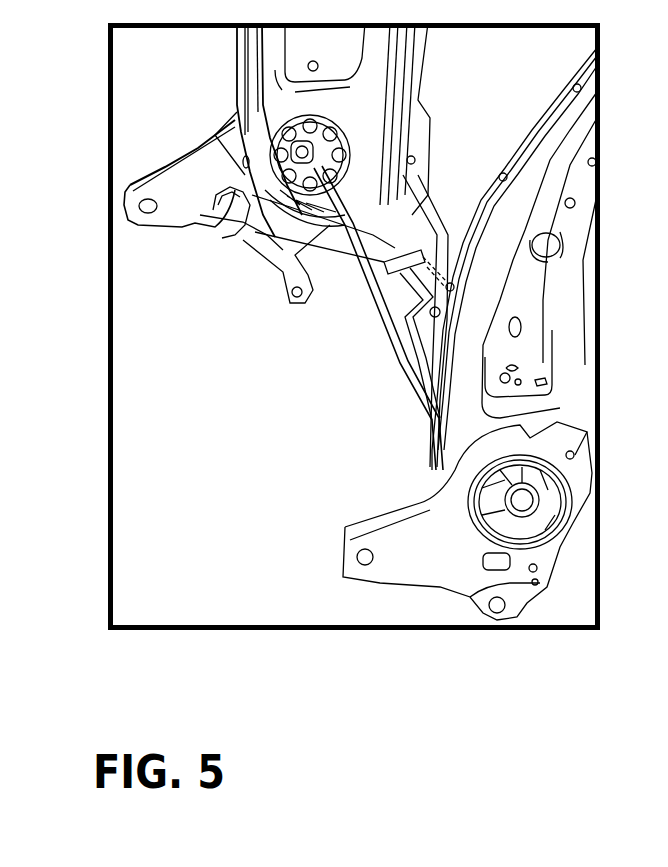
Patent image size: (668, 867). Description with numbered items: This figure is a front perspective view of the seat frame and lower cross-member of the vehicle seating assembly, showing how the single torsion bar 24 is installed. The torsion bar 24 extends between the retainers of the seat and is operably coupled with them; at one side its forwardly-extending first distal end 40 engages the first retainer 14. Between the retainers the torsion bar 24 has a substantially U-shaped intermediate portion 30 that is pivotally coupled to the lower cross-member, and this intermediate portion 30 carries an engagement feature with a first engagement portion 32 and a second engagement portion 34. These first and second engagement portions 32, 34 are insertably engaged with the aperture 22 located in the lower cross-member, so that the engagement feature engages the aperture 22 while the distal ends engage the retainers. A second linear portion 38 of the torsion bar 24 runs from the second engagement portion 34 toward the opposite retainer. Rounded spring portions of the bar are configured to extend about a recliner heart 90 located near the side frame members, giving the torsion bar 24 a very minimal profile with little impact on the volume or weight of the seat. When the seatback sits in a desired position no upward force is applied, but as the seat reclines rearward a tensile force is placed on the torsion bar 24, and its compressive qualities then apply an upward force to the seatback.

The first retainer 14 is at (245, 237).
The aperture 22 is at (415, 302).
The torsion bar 24 is at (395, 215).
The intermediate portion 30 is at (386, 270).
The first engagement portion 32 is at (425, 240).
The second engagement portion 34 is at (440, 311).
The second linear portion 38 is at (425, 338).
The first distal end 40 is at (200, 215).
The recliner heart 90 is at (467, 497).